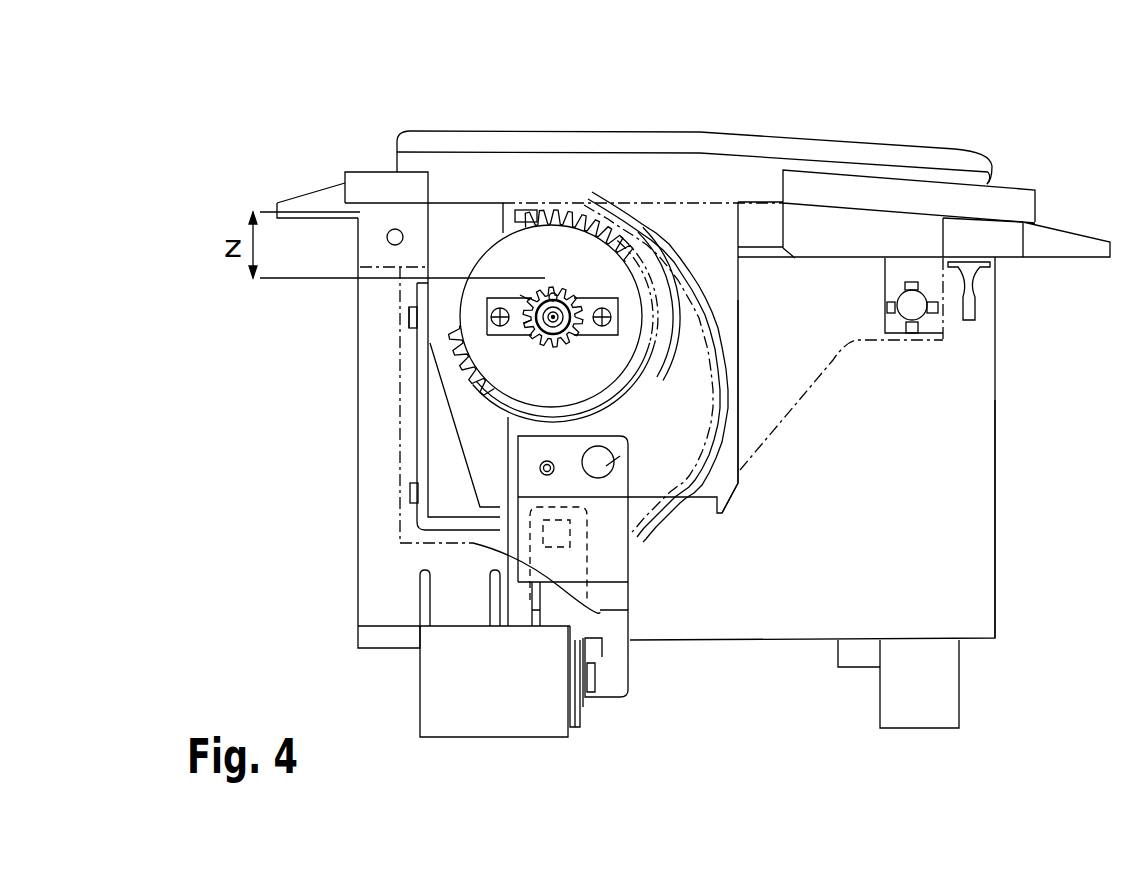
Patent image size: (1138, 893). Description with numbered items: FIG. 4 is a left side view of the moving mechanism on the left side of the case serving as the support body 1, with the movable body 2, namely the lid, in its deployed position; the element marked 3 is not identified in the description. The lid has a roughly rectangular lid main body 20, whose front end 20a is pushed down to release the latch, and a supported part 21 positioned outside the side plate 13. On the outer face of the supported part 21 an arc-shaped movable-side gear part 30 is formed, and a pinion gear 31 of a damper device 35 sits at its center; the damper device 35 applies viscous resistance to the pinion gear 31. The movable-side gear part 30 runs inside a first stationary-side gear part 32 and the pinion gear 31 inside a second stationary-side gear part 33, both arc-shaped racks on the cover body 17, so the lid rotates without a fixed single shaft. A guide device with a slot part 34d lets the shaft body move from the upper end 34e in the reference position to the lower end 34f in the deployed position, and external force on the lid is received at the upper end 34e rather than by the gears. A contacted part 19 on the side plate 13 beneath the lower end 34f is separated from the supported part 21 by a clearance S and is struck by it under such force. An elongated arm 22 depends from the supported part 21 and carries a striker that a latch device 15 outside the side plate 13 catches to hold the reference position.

The support body 1 is at (968, 594).
The movable body 2 is at (942, 150).
The cover 3 is at (606, 131).
The side plate 13 is at (950, 510).
The latch device 15 is at (575, 712).
The cover body 17 is at (783, 397).
The contacted part 19 is at (518, 580).
The lid main body 20 is at (750, 152).
The front end 20a is at (985, 175).
The supported part 21 is at (740, 470).
The elongated arm 22 is at (618, 683).
The movable-side gear part 30 is at (565, 217).
The pinion gear 31 is at (522, 340).
The first stationary-side gear part 32 is at (680, 257).
The second stationary-side gear part 33 is at (550, 270).
The slot part 34d is at (590, 450).
The upper end 34e is at (520, 295).
The lower end 34f is at (545, 455).
The damper device 35 is at (495, 318).
The clearance S is at (573, 452).